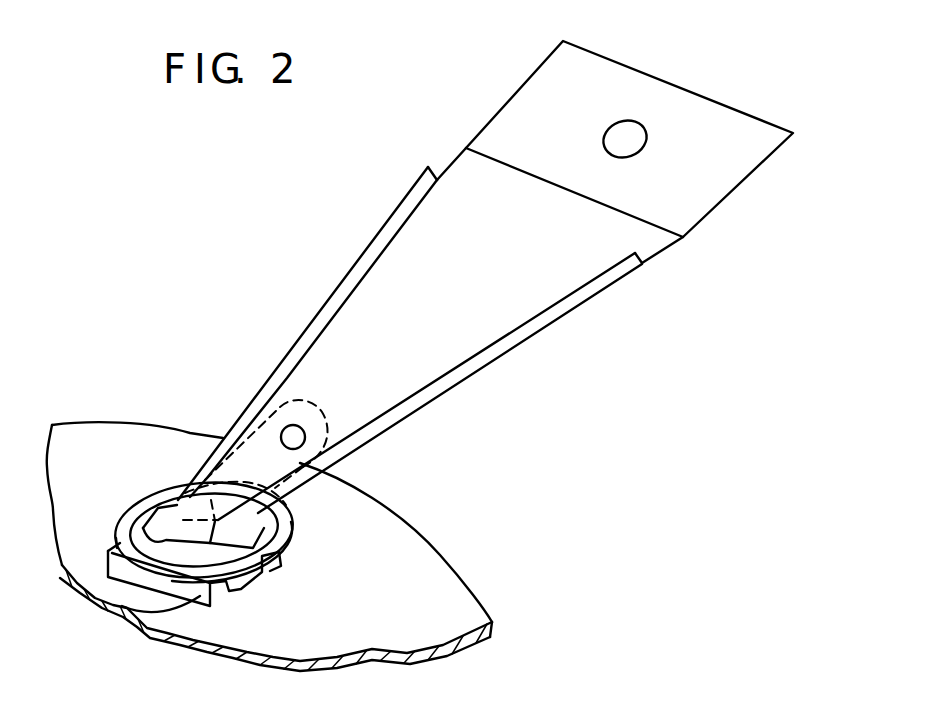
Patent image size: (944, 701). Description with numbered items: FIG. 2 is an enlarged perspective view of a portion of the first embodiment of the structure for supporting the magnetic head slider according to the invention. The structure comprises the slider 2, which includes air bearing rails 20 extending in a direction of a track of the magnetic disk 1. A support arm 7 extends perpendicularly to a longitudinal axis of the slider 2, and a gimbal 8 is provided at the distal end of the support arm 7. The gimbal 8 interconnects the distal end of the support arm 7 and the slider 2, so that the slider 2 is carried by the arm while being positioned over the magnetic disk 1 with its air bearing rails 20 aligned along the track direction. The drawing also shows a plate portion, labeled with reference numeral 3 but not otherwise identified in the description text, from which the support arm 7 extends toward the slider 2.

The magnetic disk 1 is at (278, 549).
The slider 2 is at (108, 608).
The spring arm plate 3 is at (322, 284).
The support arm 7 is at (537, 295).
The gimbal 8 is at (293, 507).
The air bearing rails 20 is at (228, 590).